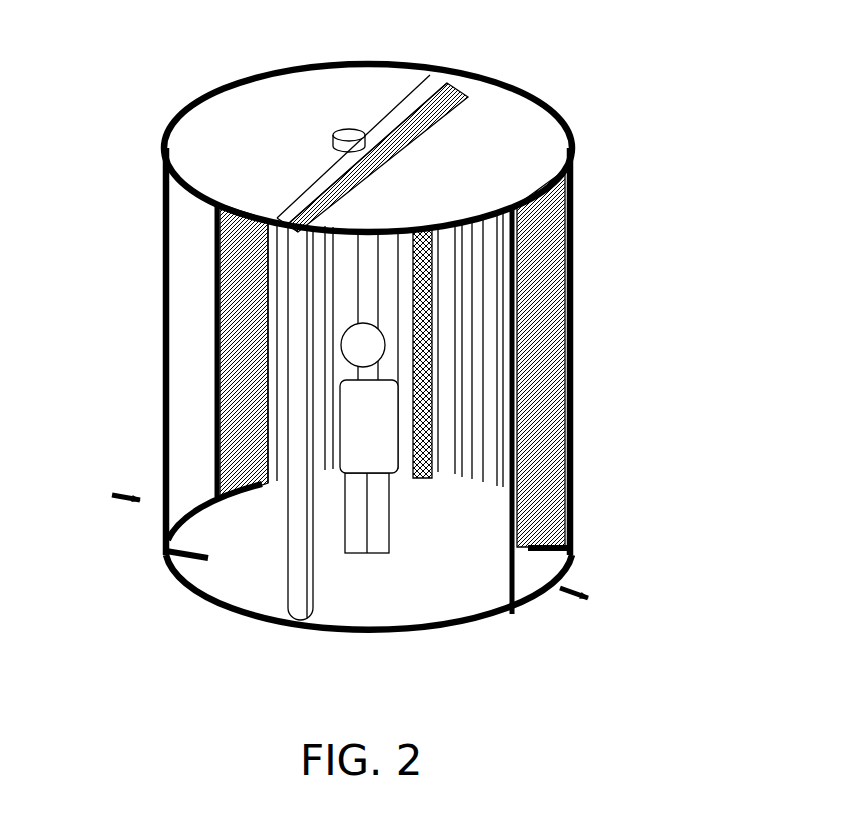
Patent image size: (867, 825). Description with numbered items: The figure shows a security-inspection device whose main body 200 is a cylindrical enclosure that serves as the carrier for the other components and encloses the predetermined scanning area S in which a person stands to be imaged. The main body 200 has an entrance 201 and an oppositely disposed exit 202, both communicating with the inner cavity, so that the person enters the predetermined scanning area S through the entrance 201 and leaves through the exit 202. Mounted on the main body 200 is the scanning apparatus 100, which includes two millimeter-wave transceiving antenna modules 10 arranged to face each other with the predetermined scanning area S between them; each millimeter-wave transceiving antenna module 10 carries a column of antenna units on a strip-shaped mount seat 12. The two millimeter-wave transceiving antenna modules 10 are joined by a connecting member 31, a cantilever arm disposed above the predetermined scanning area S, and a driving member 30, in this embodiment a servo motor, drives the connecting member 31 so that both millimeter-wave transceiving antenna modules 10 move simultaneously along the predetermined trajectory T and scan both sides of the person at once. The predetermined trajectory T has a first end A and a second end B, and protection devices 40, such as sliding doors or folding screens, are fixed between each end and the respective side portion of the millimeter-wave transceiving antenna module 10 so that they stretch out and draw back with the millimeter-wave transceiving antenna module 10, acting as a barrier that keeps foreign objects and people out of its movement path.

The main body 200 is at (253, 148).
The driving member 30 is at (457, 70).
The connecting member 31 is at (290, 235).
The protection device 40 is at (355, 290).
The millimeter-wave transceiving antenna module 10 is at (313, 403).
The scanning apparatus 100 is at (285, 298).
The mount seat 12 is at (297, 450).
The entrance 201 is at (190, 503).
The exit 202 is at (540, 587).
The first end A is at (275, 505).
The predetermined trajectory T is at (380, 620).
The second end B is at (530, 548).
The predetermined scanning area S is at (413, 582).